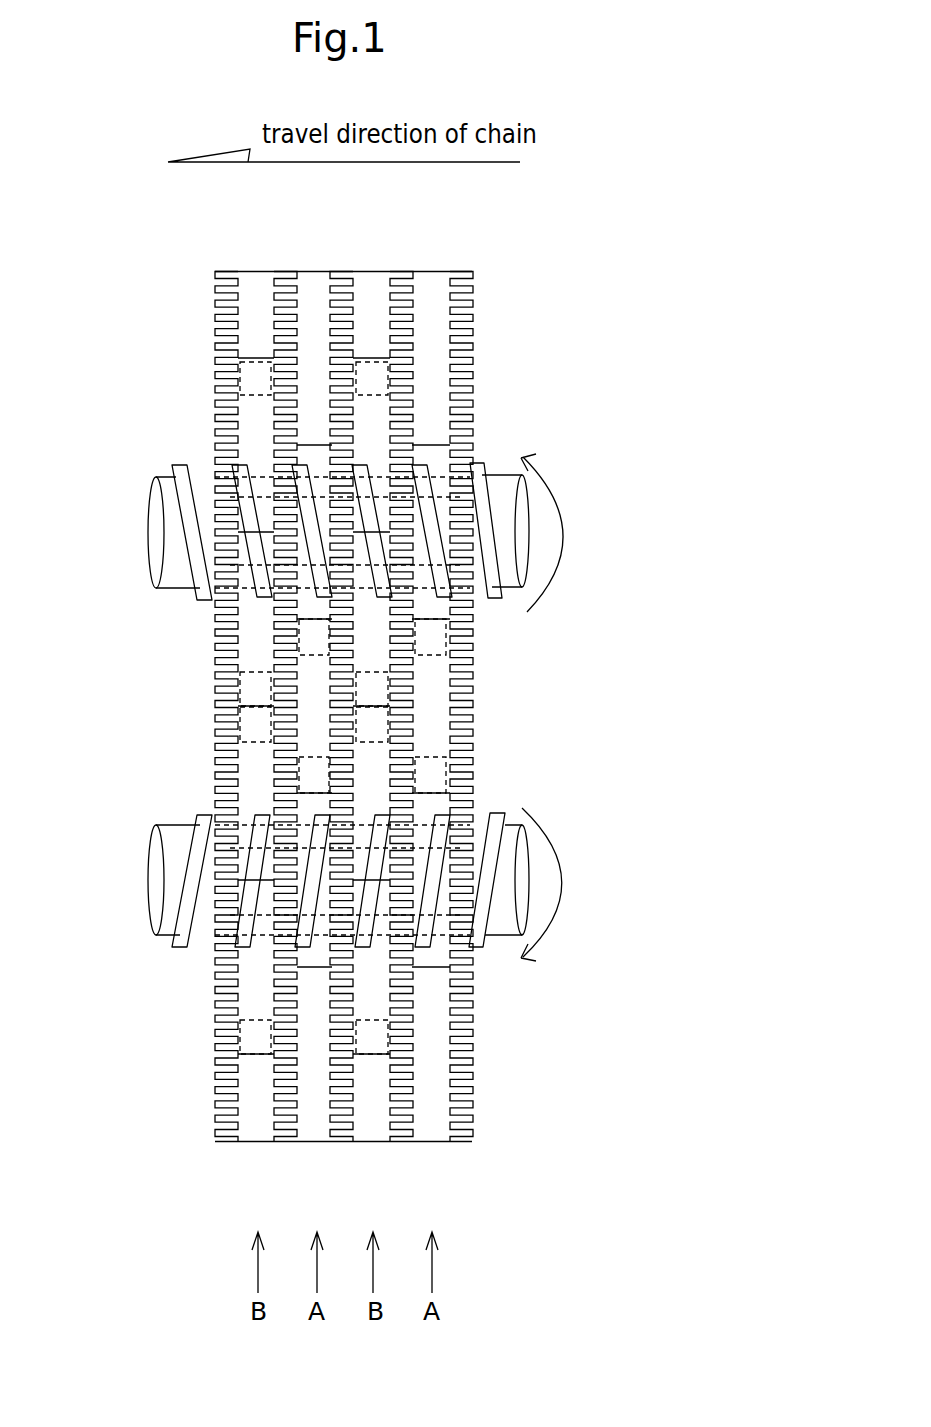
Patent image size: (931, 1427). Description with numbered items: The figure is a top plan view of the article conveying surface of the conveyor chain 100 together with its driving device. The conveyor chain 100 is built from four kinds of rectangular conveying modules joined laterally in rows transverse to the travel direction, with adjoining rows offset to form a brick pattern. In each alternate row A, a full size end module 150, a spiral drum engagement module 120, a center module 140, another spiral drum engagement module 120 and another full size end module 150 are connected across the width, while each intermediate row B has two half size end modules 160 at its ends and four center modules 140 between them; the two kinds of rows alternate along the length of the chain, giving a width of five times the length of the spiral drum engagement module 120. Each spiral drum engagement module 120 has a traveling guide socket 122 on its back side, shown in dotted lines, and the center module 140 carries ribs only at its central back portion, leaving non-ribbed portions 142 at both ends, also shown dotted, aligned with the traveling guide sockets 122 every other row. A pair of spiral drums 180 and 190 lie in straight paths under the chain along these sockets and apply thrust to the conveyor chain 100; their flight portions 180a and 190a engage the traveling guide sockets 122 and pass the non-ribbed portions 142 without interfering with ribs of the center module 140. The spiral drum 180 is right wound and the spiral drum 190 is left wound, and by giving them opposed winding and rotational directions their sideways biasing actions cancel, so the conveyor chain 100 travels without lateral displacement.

The conveyor chain 100 is at (460, 266).
The spiral drum engagement module 120 is at (428, 460).
The traveling guide socket 122 is at (313, 460).
The center module 140 is at (312, 674).
The non-ribbed portion 142 is at (227, 562).
The full size end module 150 is at (312, 278).
The half size end module 160 is at (250, 277).
The spiral drum 180 is at (160, 574).
The flight portion 180a is at (185, 467).
The spiral drum 190 is at (165, 888).
The flight portion 190a is at (190, 900).